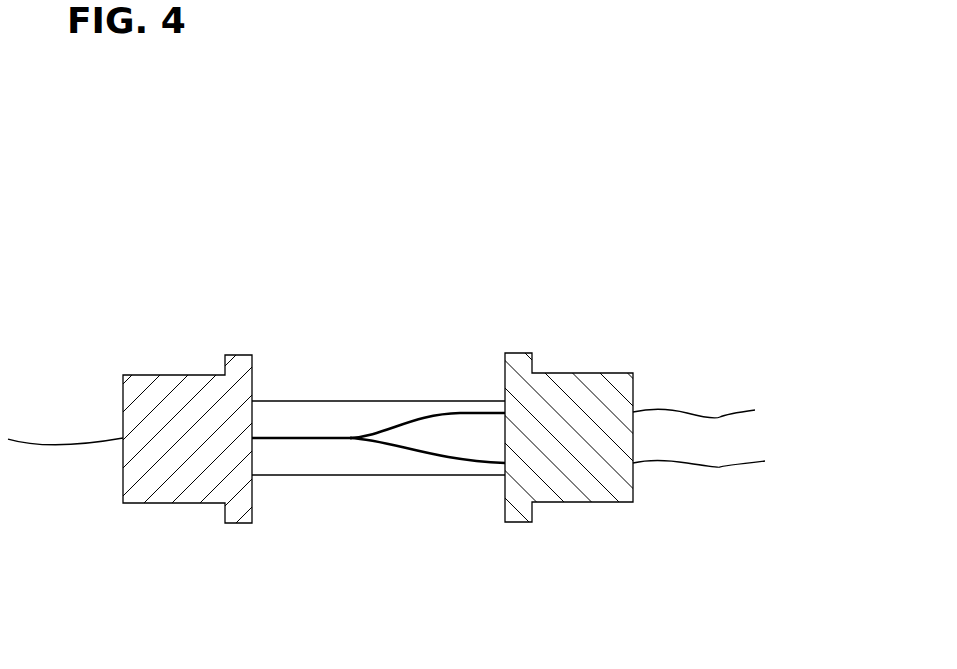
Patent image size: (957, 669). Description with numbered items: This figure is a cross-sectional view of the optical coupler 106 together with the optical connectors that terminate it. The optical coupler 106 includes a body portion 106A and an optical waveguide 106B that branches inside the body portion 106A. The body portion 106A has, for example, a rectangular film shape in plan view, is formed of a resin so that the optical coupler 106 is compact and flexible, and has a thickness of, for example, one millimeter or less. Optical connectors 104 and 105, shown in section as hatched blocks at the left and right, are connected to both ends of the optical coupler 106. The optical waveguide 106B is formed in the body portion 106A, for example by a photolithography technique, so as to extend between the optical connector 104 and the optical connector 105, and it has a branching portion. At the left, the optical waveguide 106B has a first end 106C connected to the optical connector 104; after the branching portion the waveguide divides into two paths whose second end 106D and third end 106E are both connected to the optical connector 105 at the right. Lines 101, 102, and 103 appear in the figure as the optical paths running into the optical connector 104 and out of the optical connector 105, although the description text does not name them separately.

The input optical fiber 101 is at (63, 442).
The first output optical fiber 102 is at (727, 412).
The second output optical fiber 103 is at (735, 470).
The optical connector 104 is at (163, 375).
The optical connector 105 is at (603, 373).
The optical coupler 106 is at (486, 320).
The body portion 106A is at (380, 400).
The optical waveguide 106B is at (337, 442).
The first end 106C is at (253, 437).
The second end 106D is at (503, 412).
The third end 106E is at (505, 465).